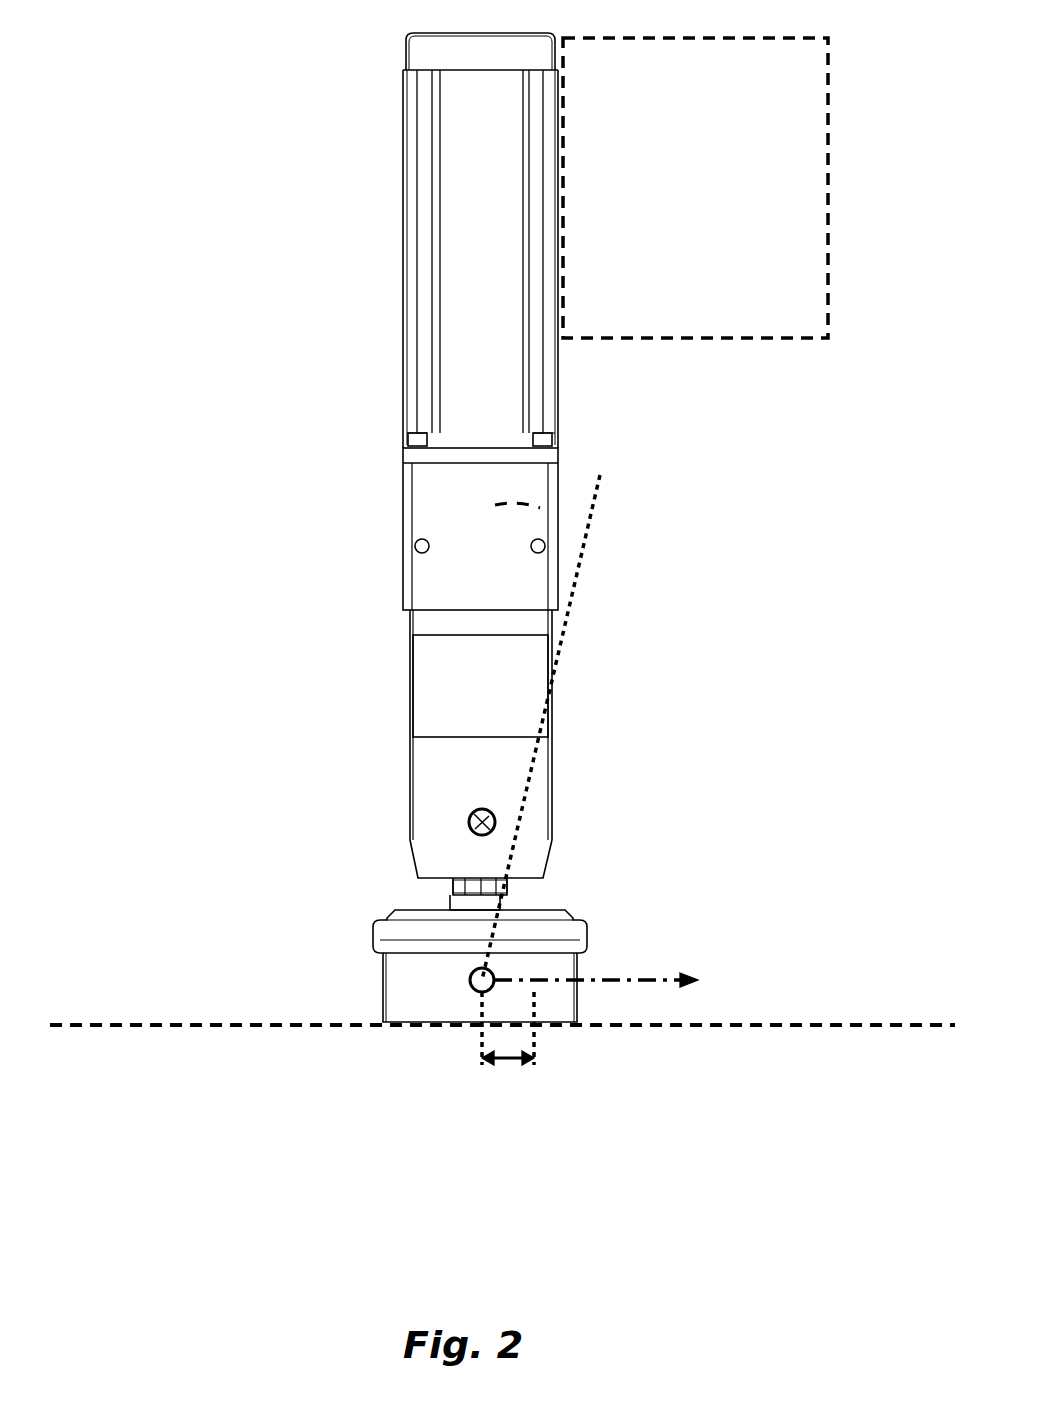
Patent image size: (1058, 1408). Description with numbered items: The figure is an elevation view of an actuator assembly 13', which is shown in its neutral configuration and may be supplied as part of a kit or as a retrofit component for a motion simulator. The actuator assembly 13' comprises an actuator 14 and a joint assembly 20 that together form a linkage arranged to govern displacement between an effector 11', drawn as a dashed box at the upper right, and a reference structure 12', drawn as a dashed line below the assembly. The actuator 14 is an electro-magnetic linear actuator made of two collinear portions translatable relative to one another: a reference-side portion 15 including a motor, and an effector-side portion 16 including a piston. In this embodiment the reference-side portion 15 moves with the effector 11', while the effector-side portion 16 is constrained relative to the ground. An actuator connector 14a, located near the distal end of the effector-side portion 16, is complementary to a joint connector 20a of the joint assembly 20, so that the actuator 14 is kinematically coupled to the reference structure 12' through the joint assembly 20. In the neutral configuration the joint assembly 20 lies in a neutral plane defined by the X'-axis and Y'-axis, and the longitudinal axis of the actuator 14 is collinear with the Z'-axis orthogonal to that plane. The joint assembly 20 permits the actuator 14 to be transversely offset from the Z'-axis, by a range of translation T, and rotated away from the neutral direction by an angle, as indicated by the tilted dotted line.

The effector 11' is at (765, 180).
The reference structure 12' is at (502, 1084).
The actuator assembly 13' is at (301, 108).
The actuator 14 is at (350, 476).
The actuator connector 14a is at (452, 886).
The reference-side portion 15 is at (407, 487).
The effector-side portion 16 is at (410, 620).
The joint assembly 20 is at (436, 923).
The joint connector 20a is at (512, 905).
The X'-axis X' is at (430, 1021).
The Y'-axis Y' is at (628, 948).
The Z'-axis Z' is at (558, 500).
The range of translation motion T is at (507, 1062).